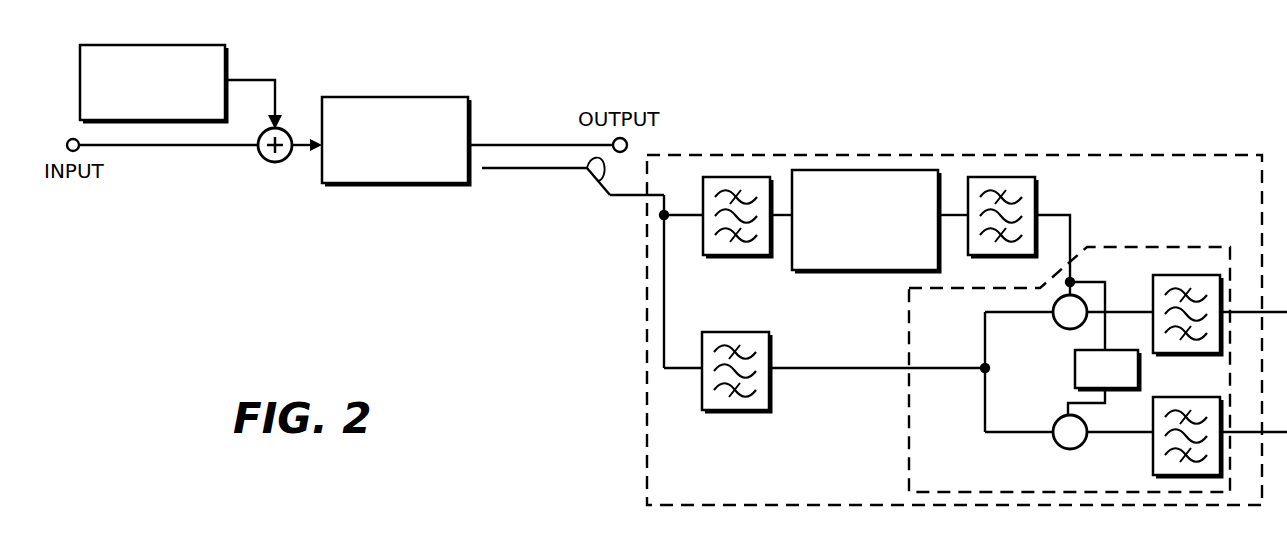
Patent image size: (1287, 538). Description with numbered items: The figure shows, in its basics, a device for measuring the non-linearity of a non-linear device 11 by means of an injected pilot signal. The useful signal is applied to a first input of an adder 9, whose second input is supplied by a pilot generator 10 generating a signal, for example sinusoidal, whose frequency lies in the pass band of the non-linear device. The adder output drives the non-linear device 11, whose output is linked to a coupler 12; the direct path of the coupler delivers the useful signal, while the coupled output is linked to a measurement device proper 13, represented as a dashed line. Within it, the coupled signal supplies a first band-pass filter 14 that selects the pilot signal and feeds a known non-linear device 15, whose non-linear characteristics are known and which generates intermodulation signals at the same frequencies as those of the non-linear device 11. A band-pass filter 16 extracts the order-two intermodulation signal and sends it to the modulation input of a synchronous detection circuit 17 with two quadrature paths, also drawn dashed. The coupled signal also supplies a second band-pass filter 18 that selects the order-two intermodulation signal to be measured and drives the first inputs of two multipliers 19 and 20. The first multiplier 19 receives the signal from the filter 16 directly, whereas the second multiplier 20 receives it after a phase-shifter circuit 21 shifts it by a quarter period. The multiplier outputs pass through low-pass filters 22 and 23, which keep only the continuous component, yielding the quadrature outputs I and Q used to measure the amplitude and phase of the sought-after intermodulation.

The adder 9 is at (268, 163).
The pilot generator 10 is at (227, 52).
The non-linear device 11 is at (397, 97).
The coupler 12 is at (600, 188).
The measurement device 13 is at (1111, 155).
The first band-pass filter 14 is at (750, 177).
The known non-linear device 15 is at (867, 170).
The band-pass filter 16 is at (1003, 177).
The synchronous detection circuit 17 is at (1163, 247).
The second band-pass filter 18 is at (742, 411).
The first multiplier 19 is at (1062, 327).
The second multiplier 20 is at (1060, 418).
The phase-shifter circuit 21 is at (1140, 372).
The low-pass filter 22 is at (1178, 275).
The low-pass filter 23 is at (1153, 460).